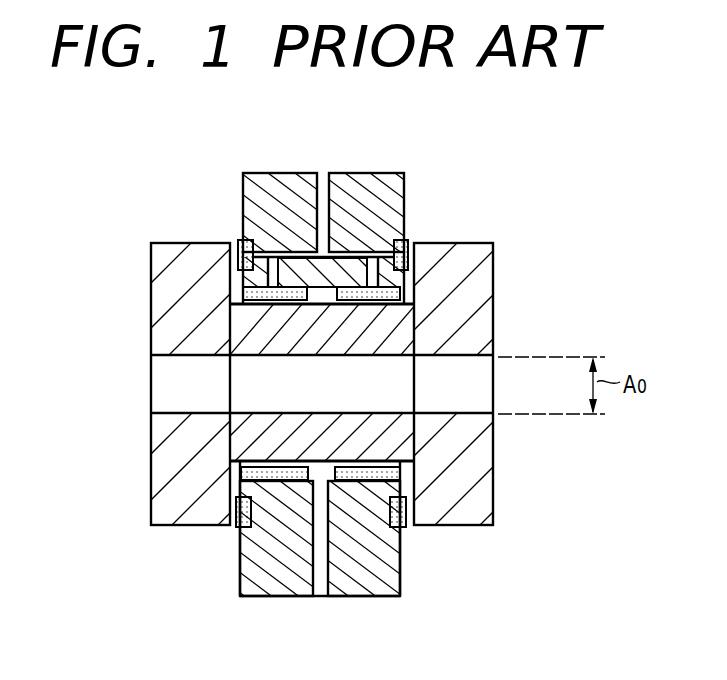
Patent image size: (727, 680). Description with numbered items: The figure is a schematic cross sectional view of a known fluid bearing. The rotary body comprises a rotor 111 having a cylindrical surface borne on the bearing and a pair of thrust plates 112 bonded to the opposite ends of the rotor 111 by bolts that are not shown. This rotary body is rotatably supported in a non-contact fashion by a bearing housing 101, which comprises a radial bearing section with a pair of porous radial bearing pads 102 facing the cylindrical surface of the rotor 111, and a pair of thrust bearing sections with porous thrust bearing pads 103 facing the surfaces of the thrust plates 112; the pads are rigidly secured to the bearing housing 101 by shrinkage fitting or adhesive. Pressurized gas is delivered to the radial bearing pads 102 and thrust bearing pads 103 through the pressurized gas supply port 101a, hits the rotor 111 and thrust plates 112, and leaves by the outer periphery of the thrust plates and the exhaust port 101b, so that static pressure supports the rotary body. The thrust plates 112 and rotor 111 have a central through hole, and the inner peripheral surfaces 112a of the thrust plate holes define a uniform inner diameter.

The bearing housing 101 is at (392, 203).
The pressurized gas supply port 101a is at (322, 190).
The exhaust port 101b is at (318, 588).
The porous radial bearing pads 102 is at (262, 477).
The porous thrust bearing pads 103 is at (237, 507).
The rotor 111 is at (262, 330).
The thrust plates 112 is at (162, 290).
The inner peripheral surfaces 112a is at (183, 413).